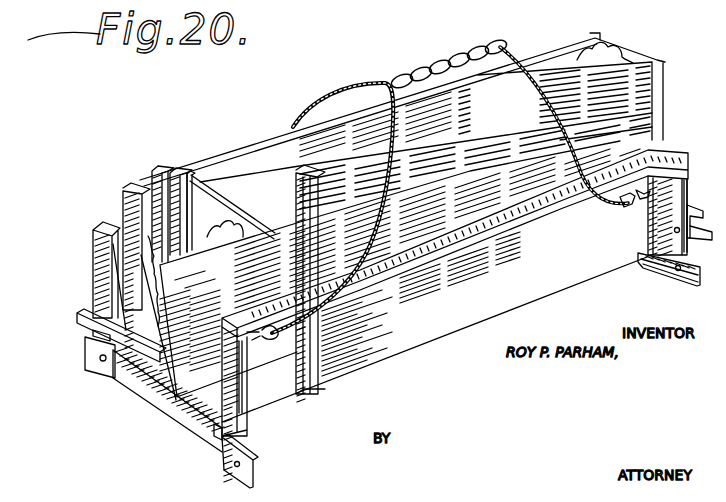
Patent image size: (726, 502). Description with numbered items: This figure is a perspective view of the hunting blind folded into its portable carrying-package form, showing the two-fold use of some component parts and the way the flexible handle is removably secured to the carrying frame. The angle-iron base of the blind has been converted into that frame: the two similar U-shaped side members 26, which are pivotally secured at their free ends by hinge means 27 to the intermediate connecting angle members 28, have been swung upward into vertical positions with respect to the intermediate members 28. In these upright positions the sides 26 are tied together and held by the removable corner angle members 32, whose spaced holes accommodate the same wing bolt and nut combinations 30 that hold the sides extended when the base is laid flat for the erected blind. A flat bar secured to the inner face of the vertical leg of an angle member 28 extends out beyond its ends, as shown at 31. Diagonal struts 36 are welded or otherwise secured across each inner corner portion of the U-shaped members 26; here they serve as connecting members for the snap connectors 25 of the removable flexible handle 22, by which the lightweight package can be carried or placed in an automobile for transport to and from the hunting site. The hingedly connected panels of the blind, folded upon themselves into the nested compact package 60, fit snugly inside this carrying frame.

The flexible handle 22 is at (453, 60).
The snap connectors 25 is at (603, 206).
The U-shaped side members 26 is at (106, 228).
The hinge means 27 is at (118, 348).
The intermediate connecting angle members 28 is at (147, 403).
The wing bolt and nut combinations 30 is at (693, 232).
The extending end of flat bar 31 is at (693, 271).
The removable corner angle members 32 is at (93, 313).
The diagonal struts 36 is at (247, 334).
The nested compact package 60 is at (188, 172).